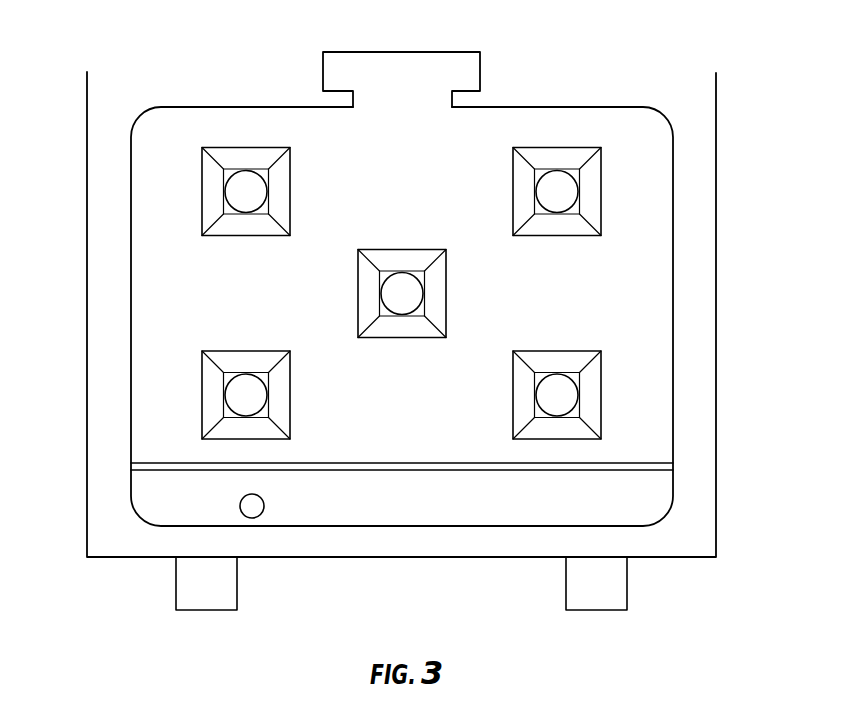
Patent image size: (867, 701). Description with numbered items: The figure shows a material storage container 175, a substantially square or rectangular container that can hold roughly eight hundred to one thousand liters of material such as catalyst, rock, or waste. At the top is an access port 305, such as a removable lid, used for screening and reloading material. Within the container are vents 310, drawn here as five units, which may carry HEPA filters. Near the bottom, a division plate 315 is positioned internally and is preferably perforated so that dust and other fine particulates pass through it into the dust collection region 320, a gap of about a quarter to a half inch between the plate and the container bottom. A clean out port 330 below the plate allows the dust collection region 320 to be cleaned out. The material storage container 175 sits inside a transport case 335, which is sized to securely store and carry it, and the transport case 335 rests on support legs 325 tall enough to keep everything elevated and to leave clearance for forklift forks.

The material storage container 175 is at (412, 335).
The access port 305 is at (480, 72).
The vents 310 is at (601, 197).
The division plate 315 is at (637, 462).
The dust collection region 320 is at (673, 495).
The support legs 325 is at (627, 586).
The clean out port 330 is at (264, 506).
The transport case 335 is at (87, 437).